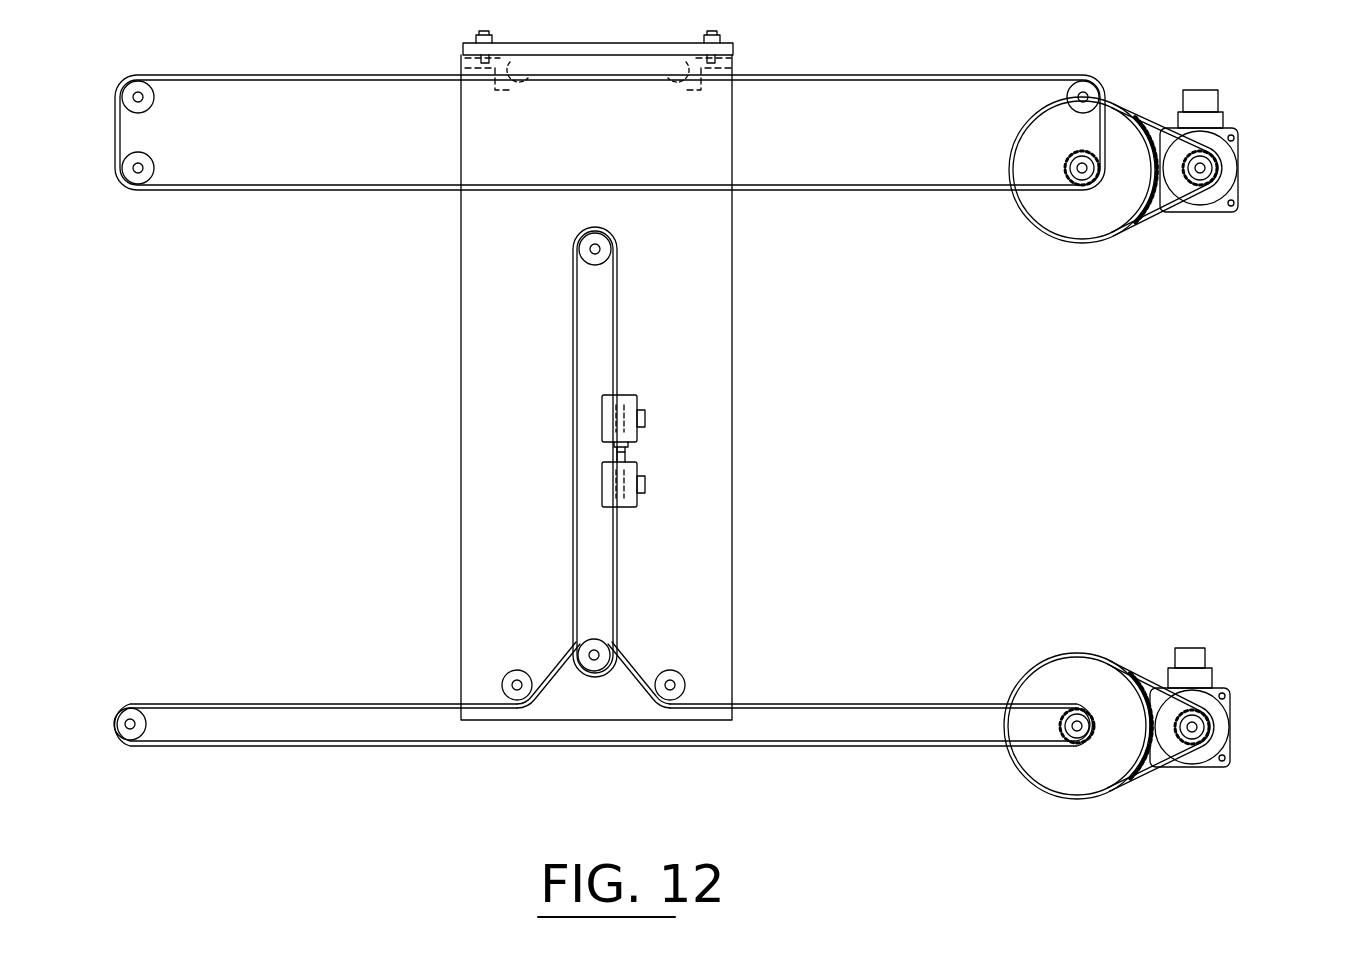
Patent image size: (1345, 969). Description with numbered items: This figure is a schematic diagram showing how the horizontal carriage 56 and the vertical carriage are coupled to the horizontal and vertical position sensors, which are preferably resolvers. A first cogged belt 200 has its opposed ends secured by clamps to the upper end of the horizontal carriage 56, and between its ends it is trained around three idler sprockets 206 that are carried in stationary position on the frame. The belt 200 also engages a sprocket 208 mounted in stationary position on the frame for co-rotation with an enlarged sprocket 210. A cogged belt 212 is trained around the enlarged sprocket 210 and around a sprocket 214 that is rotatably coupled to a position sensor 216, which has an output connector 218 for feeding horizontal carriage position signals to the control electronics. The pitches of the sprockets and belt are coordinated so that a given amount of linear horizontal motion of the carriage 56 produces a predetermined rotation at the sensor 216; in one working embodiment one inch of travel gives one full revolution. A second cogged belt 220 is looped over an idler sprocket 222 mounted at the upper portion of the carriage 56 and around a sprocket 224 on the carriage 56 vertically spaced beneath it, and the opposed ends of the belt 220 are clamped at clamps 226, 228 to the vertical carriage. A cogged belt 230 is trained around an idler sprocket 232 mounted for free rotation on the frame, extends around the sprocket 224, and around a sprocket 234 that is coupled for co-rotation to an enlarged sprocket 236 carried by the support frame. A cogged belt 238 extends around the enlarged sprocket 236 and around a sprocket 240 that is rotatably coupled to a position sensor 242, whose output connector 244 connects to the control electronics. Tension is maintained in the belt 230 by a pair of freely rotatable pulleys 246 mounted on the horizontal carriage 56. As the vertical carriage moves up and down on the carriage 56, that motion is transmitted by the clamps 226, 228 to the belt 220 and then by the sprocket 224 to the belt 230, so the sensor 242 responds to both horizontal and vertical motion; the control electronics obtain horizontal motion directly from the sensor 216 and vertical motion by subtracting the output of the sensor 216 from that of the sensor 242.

The horizontal carriage 56 is at (738, 345).
The first cogged belt 200 is at (868, 76).
The idler sprockets 206 is at (150, 155).
The sprocket 208 is at (1066, 166).
The enlarged sprocket 210 is at (1053, 213).
The cogged belt 212 is at (1140, 112).
The sprocket 214 is at (1216, 170).
The position sensor 216 is at (1228, 212).
The output connector 218 is at (1215, 102).
The second cogged belt 220 is at (620, 307).
The idler sprocket 222 is at (607, 244).
The sprocket 224 is at (600, 648).
The clamp 226 is at (625, 402).
The clamp 228 is at (625, 465).
The cogged belt 230 is at (852, 703).
The idler sprocket 232 is at (130, 708).
The sprocket 234 is at (1076, 710).
The enlarged sprocket 236 is at (1050, 773).
The cogged belt 238 is at (1130, 686).
The sprocket 240 is at (1206, 727).
The position sensor 242 is at (1222, 770).
The output connector 244 is at (1200, 655).
The pulleys 246 is at (513, 669).